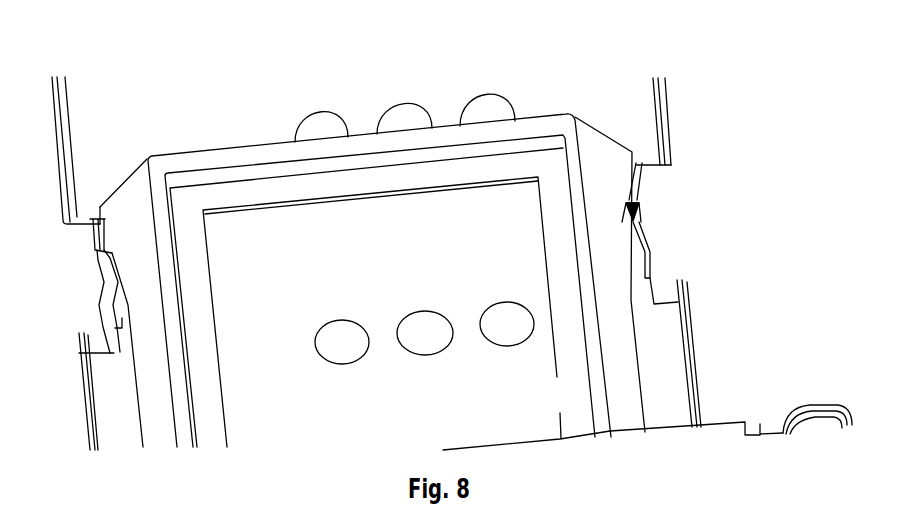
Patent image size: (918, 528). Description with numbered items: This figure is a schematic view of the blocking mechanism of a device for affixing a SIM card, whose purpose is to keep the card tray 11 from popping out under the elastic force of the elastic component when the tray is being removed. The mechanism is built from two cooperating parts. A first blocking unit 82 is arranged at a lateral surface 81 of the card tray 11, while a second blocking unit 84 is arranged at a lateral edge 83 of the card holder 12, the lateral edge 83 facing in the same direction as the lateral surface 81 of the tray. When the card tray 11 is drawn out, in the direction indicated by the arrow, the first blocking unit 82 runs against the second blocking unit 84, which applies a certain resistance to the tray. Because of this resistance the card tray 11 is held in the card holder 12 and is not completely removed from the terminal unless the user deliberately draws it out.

The card tray 11 is at (220, 157).
The card holder 12 is at (562, 87).
The lateral surface 81 is at (615, 347).
The first blocking unit 82 is at (615, 173).
The lateral edge 83 is at (687, 368).
The second blocking unit 84 is at (642, 223).